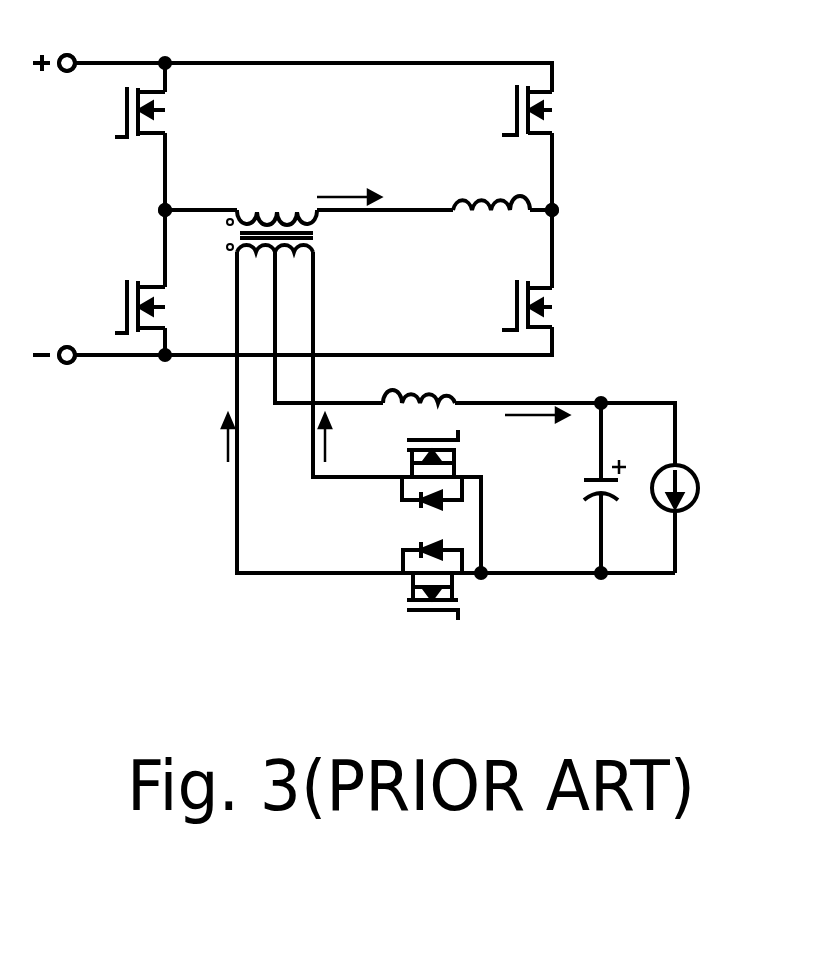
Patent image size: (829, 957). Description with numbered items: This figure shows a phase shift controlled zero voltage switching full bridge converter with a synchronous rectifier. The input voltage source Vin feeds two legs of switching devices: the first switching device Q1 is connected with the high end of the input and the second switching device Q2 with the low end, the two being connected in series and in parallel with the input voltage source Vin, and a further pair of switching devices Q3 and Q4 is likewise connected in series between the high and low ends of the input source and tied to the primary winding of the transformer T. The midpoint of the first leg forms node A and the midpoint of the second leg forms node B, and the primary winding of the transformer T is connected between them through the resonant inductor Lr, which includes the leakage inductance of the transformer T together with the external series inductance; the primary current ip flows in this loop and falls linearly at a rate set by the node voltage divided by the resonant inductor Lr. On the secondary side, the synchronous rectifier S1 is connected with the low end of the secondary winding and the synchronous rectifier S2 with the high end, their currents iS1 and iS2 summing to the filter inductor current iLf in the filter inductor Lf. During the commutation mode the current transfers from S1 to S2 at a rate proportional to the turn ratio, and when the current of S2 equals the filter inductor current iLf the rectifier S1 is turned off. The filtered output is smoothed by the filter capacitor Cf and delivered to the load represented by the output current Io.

The first switching device Q1 is at (125, 112).
The second switching device Q2 is at (125, 307).
The switching device Q3 is at (551, 111).
The switching device Q4 is at (551, 307).
The transformer T is at (290, 232).
The resonant inductor Lr is at (491, 175).
The filter inductor Lf is at (439, 379).
The second synchronous rectifier S1 is at (452, 466).
The first synchronous rectifier S2 is at (454, 585).
The output filter capacitor Cf is at (592, 488).
The output current Io is at (692, 491).
The node A is at (154, 211).
The node B is at (567, 211).
The input voltage source Vin is at (64, 209).
The primary current ip is at (349, 180).
The current of S1 iS1 is at (344, 440).
The current of S2 iS2 is at (215, 440).
The filter inductor current iLf is at (537, 435).